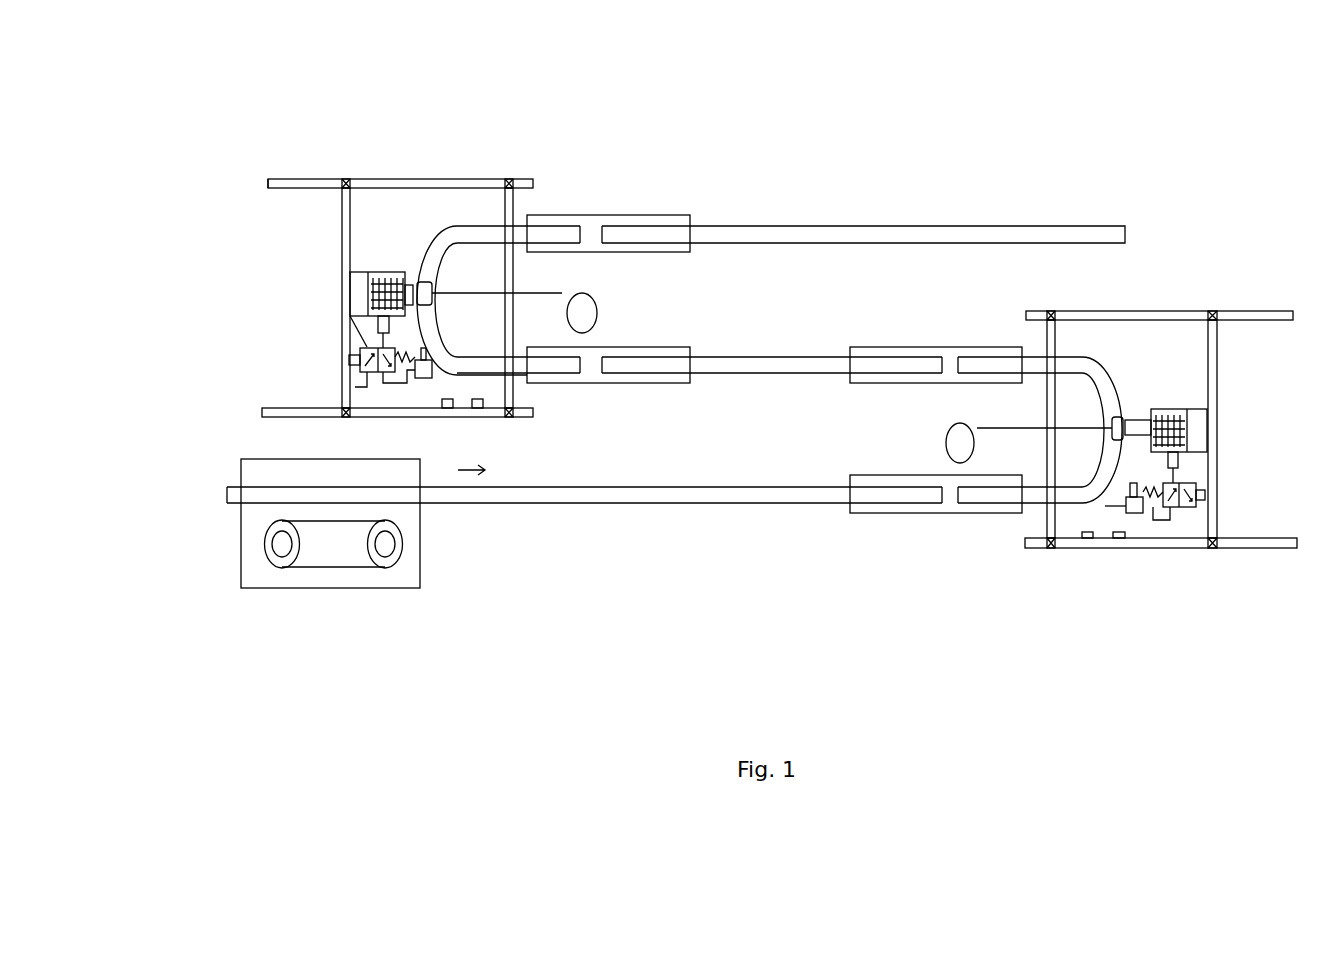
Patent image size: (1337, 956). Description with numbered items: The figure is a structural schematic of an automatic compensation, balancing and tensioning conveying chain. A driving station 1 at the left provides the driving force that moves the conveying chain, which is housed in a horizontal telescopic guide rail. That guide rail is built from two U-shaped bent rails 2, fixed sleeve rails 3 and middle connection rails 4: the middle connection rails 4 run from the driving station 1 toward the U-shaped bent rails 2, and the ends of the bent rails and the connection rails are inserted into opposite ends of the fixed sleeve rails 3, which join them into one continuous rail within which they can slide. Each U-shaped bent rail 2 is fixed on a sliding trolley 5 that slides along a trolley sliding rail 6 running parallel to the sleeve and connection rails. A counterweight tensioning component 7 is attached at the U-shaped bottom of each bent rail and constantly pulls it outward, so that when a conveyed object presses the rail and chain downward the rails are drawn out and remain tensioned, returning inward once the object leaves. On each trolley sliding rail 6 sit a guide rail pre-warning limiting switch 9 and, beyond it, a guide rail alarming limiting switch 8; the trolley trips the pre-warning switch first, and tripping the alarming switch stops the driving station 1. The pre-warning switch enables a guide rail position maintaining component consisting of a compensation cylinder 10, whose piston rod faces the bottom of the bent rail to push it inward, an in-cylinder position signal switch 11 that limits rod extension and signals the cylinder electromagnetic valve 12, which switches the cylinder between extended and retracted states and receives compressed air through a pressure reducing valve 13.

The driving station 1 is at (241, 459).
The U-shaped bent rail 2 is at (455, 228).
The fixed sleeve rail 3 is at (600, 215).
The middle connection rail 4 is at (622, 503).
The sliding trolley 5 is at (390, 208).
The trolley sliding rail 6 is at (268, 185).
The counterweight tensioning component 7 is at (580, 313).
The guide rail alarming limiting switch 8 is at (1119, 548).
The guide rail pre-warning limiting switch 9 is at (1087, 538).
The compensation cylinder 10 is at (1187, 423).
The in-cylinder position signal switch 11 is at (1178, 462).
The cylinder electromagnetic valve 12 is at (1180, 507).
The pressure reducing valve 13 is at (1125, 515).